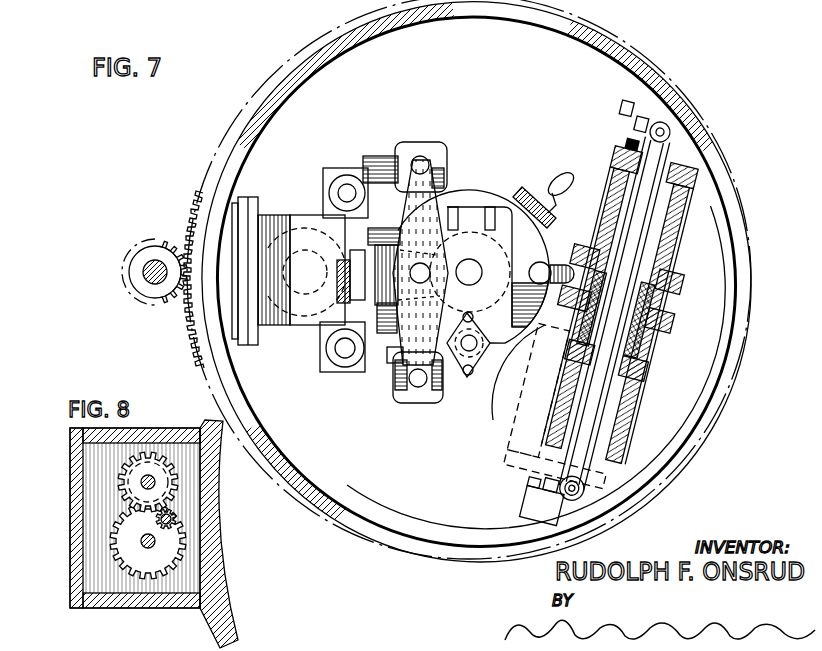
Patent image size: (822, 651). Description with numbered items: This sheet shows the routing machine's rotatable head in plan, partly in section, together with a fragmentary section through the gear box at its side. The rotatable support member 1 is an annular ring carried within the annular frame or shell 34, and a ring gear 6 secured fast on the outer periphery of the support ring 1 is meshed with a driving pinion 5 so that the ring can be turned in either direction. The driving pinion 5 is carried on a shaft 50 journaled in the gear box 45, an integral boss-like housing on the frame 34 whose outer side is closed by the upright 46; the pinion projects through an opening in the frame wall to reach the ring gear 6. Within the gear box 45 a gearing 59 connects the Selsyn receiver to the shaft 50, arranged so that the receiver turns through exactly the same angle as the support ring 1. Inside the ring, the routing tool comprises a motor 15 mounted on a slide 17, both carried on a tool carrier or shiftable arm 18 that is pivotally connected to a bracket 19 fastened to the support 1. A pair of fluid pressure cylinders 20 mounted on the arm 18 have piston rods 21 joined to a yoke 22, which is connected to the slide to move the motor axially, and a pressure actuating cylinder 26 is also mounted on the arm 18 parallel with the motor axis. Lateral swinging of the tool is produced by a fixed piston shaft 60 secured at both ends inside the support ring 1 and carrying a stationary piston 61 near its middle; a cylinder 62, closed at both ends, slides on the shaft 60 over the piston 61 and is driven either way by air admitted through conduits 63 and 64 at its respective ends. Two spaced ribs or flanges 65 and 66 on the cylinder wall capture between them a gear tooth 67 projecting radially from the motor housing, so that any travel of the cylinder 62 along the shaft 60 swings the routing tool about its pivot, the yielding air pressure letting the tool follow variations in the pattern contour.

In FIG. 7, the rotatable support member 1 is at (520, 17).
In FIG. 7, the driving pinion 5 is at (140, 285).
In FIG. 7, the ring gear 6 is at (207, 193).
In FIG. 7, the motor 15 is at (485, 191).
In FIG. 7, the slide 17 is at (340, 340).
In FIG. 7, the tool carrier or shiftable arm 18 is at (313, 222).
In FIG. 7, the bracket 19 is at (263, 222).
In FIG. 7, the fluid pressure cylinders 20 is at (428, 153).
In FIG. 7, the piston rods 21 is at (347, 352).
In FIG. 7, the yoke 22 is at (445, 176).
In FIG. 7, the pressure actuating cylinder 26 is at (336, 300).
In FIG. 8, the annular frame or shell 34 is at (215, 596).
In FIG. 8, the gear box 45 is at (155, 432).
In FIG. 8, the upright 46 is at (72, 470).
In FIG. 8, the shaft 50 is at (183, 518).
In FIG. 8, the gearing 59 is at (102, 543).
In FIG. 7, the fixed piston shaft 60 is at (643, 198).
In FIG. 7, the stationary piston 61 is at (696, 300).
In FIG. 7, the cylinder 62 is at (672, 256).
In FIG. 7, the conduit 63 is at (631, 144).
In FIG. 7, the conduit 64 is at (560, 398).
In FIG. 7, the rib or flange 65 is at (578, 303).
In FIG. 7, the rib or flange 66 is at (660, 357).
In FIG. 7, the gear tooth 67 is at (558, 262).